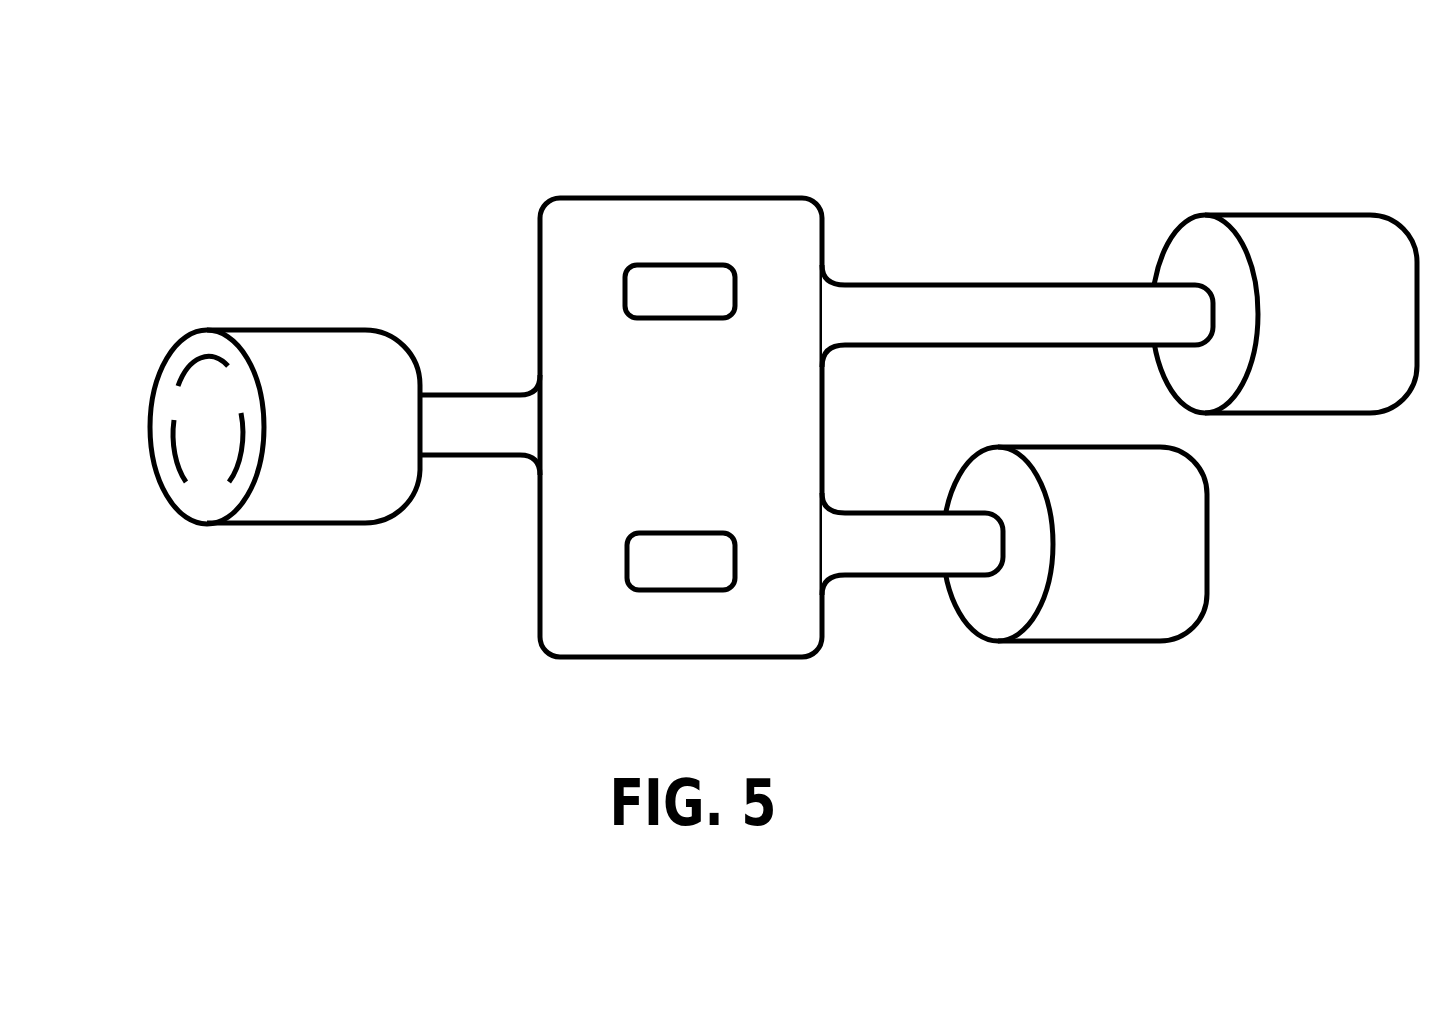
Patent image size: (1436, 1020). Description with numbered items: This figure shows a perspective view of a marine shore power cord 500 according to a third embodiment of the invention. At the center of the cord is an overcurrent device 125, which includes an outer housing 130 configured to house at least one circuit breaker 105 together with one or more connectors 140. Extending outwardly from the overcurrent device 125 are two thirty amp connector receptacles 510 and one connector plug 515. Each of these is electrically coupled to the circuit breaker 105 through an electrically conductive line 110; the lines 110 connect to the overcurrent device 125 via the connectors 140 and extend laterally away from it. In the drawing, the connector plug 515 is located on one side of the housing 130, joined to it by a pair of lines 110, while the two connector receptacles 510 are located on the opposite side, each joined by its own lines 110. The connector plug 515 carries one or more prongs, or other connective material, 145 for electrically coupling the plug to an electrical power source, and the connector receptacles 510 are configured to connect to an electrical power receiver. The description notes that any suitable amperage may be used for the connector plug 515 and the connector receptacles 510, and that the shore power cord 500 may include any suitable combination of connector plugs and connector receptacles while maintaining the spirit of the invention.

The marine shore power cord 500 is at (512, 102).
The circuit breaker 105 is at (676, 292).
The electrically conductive line 110 is at (498, 393).
The overcurrent device 125 is at (684, 393).
The outer housing 130 is at (596, 658).
The connector 140 is at (535, 458).
The prongs 145 is at (206, 352).
The connector receptacle 510 is at (1318, 213).
The connector plug 515 is at (343, 328).